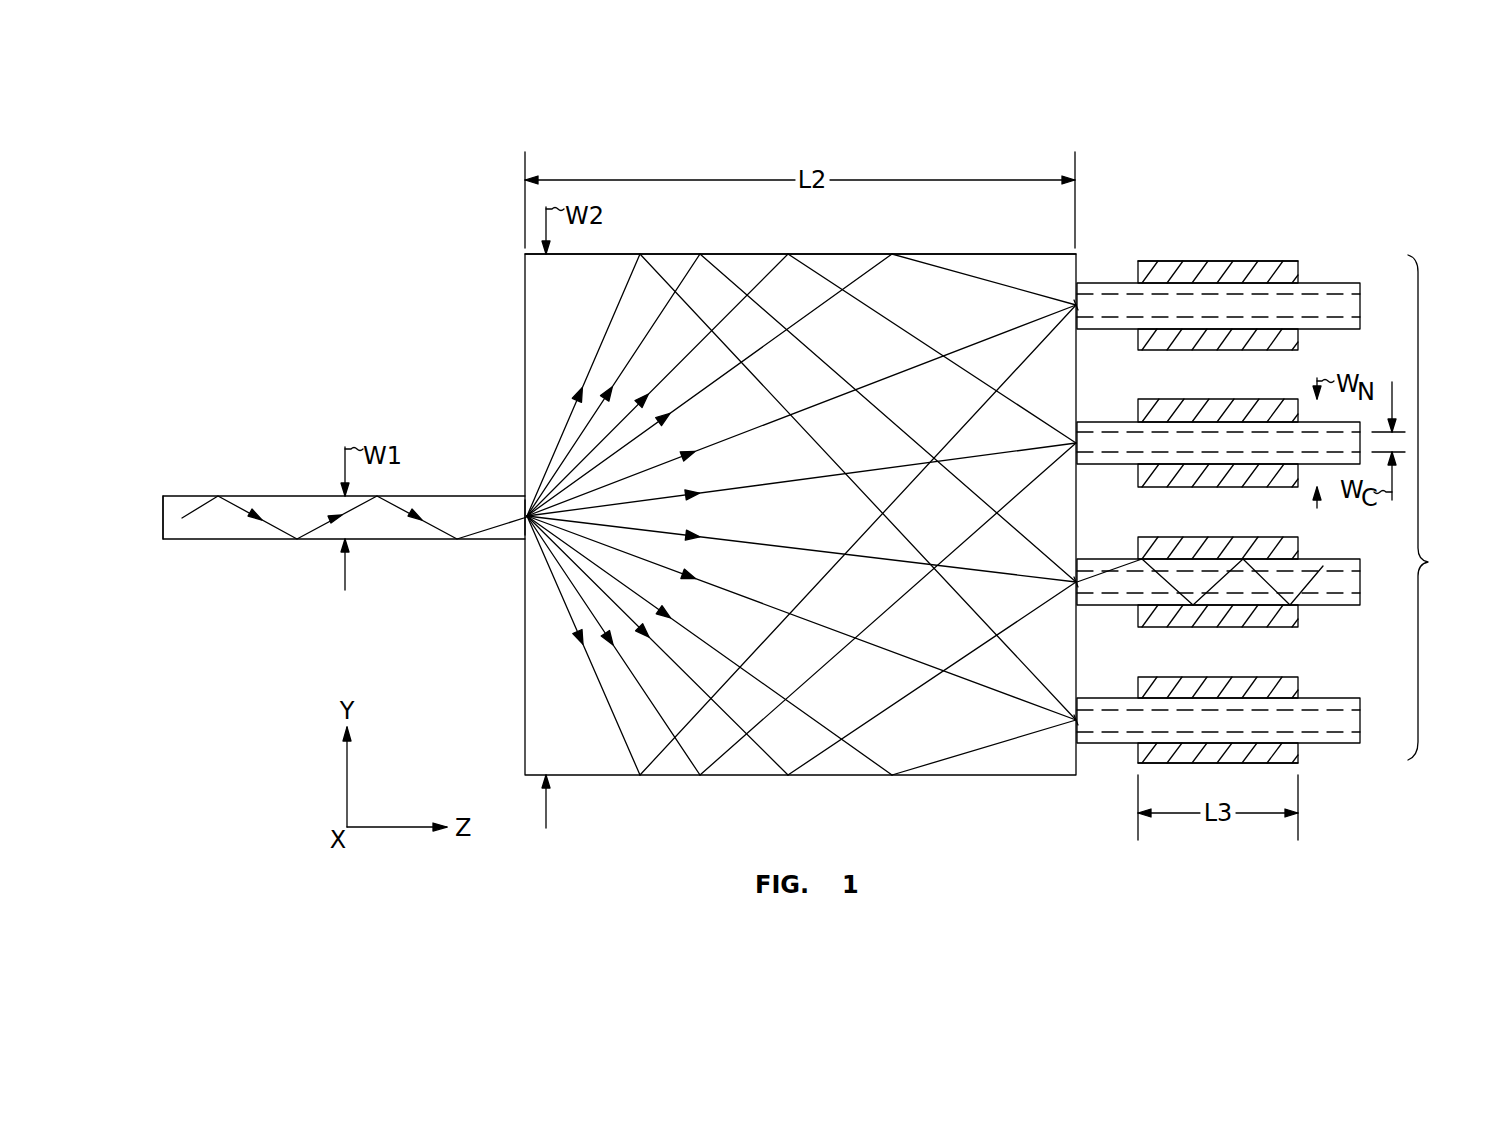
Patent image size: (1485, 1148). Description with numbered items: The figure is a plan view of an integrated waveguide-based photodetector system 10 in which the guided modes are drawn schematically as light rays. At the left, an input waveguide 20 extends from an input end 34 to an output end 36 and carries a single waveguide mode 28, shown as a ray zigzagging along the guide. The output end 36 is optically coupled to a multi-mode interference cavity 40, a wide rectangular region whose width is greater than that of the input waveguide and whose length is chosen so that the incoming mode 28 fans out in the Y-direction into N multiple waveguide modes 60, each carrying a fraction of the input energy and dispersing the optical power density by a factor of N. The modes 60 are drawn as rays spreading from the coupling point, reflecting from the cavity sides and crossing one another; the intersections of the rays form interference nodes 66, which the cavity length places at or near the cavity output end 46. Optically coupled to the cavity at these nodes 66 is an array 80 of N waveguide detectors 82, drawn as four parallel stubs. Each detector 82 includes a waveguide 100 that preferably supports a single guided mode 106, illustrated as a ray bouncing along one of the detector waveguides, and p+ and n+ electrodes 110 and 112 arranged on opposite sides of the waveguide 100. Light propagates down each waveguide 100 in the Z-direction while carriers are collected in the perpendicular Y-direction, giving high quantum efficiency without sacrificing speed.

The integrated waveguide-based photodetector system 10 is at (1162, 135).
The input waveguide 20 is at (284, 494).
The single waveguide mode 28 is at (430, 522).
The input end 34 is at (163, 517).
The output end 36 is at (519, 528).
The multi-mode interference (MMI) cavity 40 is at (745, 782).
The output end 46 is at (845, 252).
The multiple waveguide modes 60 is at (578, 665).
The interference nodes 66 is at (1068, 293).
The array of waveguide detectors 80 is at (1430, 562).
The waveguide detector 82 is at (1362, 255).
The waveguide 100 is at (1108, 284).
The single guided mode 106 is at (1318, 590).
The p+ electrode 110 is at (1238, 259).
The n+ electrode 112 is at (1178, 362).